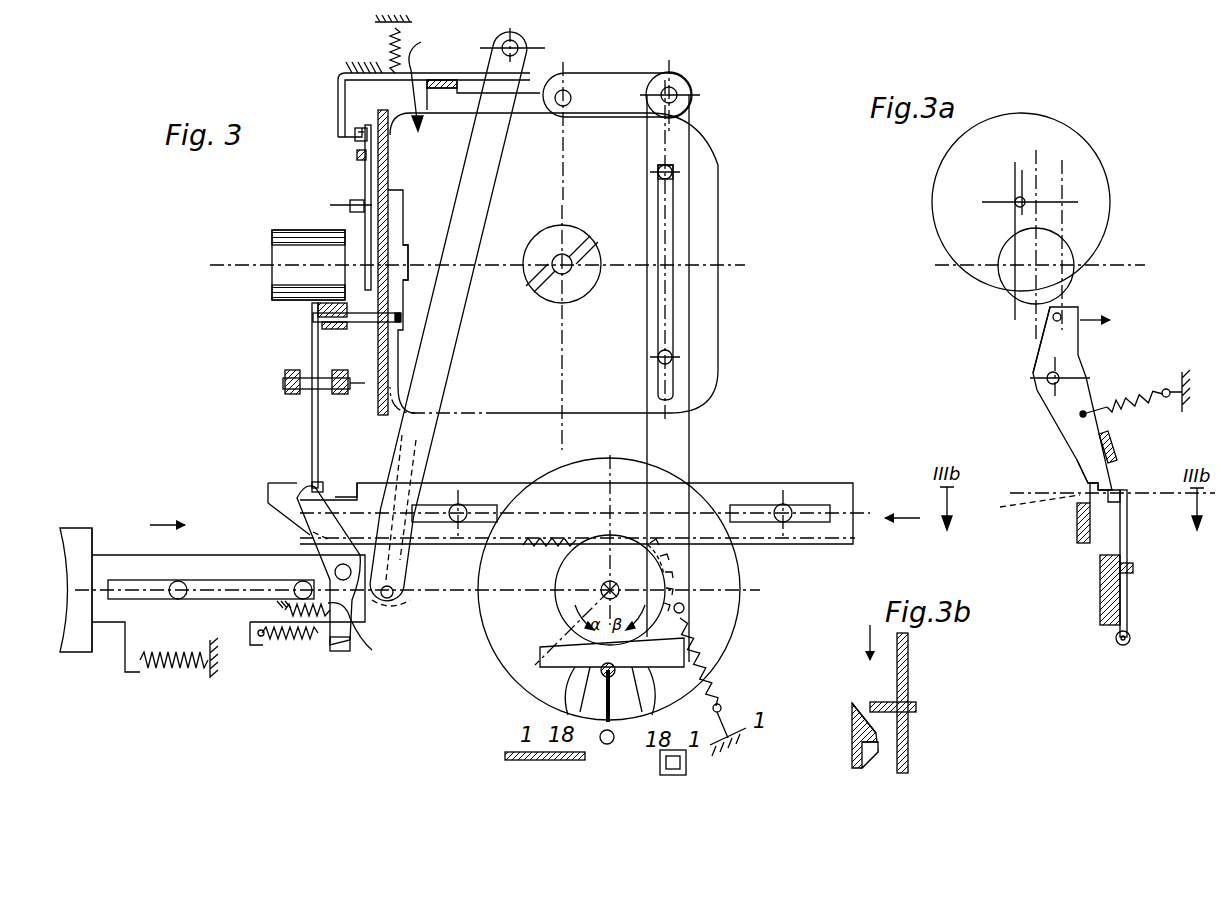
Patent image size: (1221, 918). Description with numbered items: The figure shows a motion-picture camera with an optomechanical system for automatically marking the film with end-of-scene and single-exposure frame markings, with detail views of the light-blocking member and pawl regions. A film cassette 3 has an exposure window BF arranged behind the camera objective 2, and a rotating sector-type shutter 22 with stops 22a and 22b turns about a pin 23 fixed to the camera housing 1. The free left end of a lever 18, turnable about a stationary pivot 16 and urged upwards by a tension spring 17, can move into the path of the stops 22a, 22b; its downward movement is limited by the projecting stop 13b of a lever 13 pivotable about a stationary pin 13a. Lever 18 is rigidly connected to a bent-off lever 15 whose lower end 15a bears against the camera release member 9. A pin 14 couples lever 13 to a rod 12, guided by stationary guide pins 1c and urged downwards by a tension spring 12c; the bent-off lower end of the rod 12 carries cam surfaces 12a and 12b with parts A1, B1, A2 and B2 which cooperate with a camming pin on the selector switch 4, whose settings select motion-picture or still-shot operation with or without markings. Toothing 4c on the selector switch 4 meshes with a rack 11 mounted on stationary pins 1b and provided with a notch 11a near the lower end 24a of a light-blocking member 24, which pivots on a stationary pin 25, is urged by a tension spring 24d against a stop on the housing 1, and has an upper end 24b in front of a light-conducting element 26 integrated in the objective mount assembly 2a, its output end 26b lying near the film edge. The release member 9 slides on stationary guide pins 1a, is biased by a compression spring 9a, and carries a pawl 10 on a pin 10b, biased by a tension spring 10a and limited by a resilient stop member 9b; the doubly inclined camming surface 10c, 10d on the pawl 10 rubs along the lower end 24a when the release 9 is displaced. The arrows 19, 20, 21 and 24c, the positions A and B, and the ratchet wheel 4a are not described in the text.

In FIG. 3, the camera housing 1 is at (370, 115).
In FIG. 3A, the camera housing 1 is at (1115, 445).
In FIG. 3, the stationary guide pins 1a is at (298, 582).
In FIG. 3, the stationary pins 1b is at (460, 505).
In FIG. 3, the stationary guide pins 1c is at (672, 172).
In FIG. 3, the camera objective 2 is at (282, 232).
In FIG. 3, the mount assembly 2a is at (318, 307).
In FIG. 3, the film cassette 3 is at (705, 232).
In FIG. 3, the selector switch 4 is at (735, 604).
In FIG. 3, the ratchet wheel 4a is at (615, 582).
In FIG. 3, the toothing 4c is at (668, 572).
In FIG. 3, the camera release member 9 is at (108, 555).
In FIG. 3A, the camera release member 9 is at (1100, 604).
In FIG. 3, the compression spring 9a is at (175, 670).
In FIG. 3, the resilient stop member 9b is at (365, 632).
In FIG. 3, the pawl 10 is at (313, 532).
In FIG. 3A, the pawl 10 is at (1128, 532).
In FIG. 3B, the pawl 10 is at (852, 735).
In FIG. 3, the tension spring 10a is at (325, 645).
In FIG. 3, the pin 10b is at (360, 612).
In FIG. 3A, the pin 10b is at (1134, 572).
In FIG. 3, the camming surface 10c is at (312, 488).
In FIG. 3B, the camming surface 10c is at (870, 748).
In FIG. 3, the camming surface 10d is at (300, 492).
In FIG. 3A, the camming surface 10d is at (1115, 490).
In FIG. 3B, the camming surface 10d is at (854, 704).
In FIG. 3, the rack 11 is at (490, 482).
In FIG. 3A, the rack 11 is at (1078, 536).
In FIG. 3B, the rack 11 is at (908, 760).
In FIG. 3, the notch 11a is at (338, 495).
In FIG. 3A, the notch 11a is at (1035, 507).
In FIG. 3, the rod 12 is at (685, 440).
In FIG. 3, the cam surface 12a is at (603, 729).
In FIG. 3, the cam surface 12b is at (652, 700).
In FIG. 3, the tension spring 12c is at (722, 670).
In FIG. 3, the lever 13 is at (630, 75).
In FIG. 3, the stationary pin 13a is at (568, 92).
In FIG. 3, the projecting stop 13b is at (440, 80).
In FIG. 3, the pin 14 is at (676, 92).
In FIG. 3, the bent-off lever 15 is at (465, 305).
In FIG. 3, the lower end 15a is at (405, 603).
In FIG. 3, the stationary pivot 16 is at (518, 45).
In FIG. 3, the tension spring 17 is at (388, 45).
In FIG. 3, the lever 18 is at (338, 76).
In FIG. 3, the direction arrow 19 is at (428, 80).
In FIG. 3, the direction arrow 20 is at (906, 503).
In FIG. 3, the direction arrow 21 is at (155, 522).
In FIG. 3B, the direction arrow 21 is at (856, 636).
In FIG. 3, the rotating sector-type shutter 22 is at (364, 170).
In FIG. 3A, the rotating sector-type shutter 22 is at (940, 228).
In FIG. 3, the stop 22a is at (356, 132).
In FIG. 3, the stop 22b is at (357, 154).
In FIG. 3, the pin 23 is at (350, 203).
In FIG. 3A, the pin 23 is at (1016, 200).
In FIG. 3, the light-blocking member 24 is at (312, 345).
In FIG. 3A, the light-blocking member 24 is at (1040, 378).
In FIG. 3, the lower end 24a is at (312, 487).
In FIG. 3A, the lower end 24a is at (1076, 480).
In FIG. 3B, the lower end 24a is at (905, 700).
In FIG. 3, the upper end 24b is at (313, 318).
In FIG. 3A, the upper end 24b is at (1045, 332).
In FIG. 3A, the rocker direction 24c is at (1090, 320).
In FIG. 3A, the tension spring 24d is at (1128, 395).
In FIG. 3, the stationary pin 25 is at (284, 382).
In FIG. 3A, the stationary pin 25 is at (1048, 382).
In FIG. 3, the light-conducting element 26 is at (362, 330).
In FIG. 3A, the light-conducting element 26 is at (1052, 318).
In FIG. 3, the output end 26b is at (398, 313).
In FIG. 3, the exposure window BF is at (406, 250).
In FIG. 3, the position A is at (409, 467).
In FIG. 3, the position B is at (405, 503).
In FIG. 3, the cam surface part A1 is at (590, 700).
In FIG. 3, the cam surface part A2 is at (630, 700).
In FIG. 3, the cam surface part B1 is at (559, 693).
In FIG. 3, the cam surface part B2 is at (666, 688).